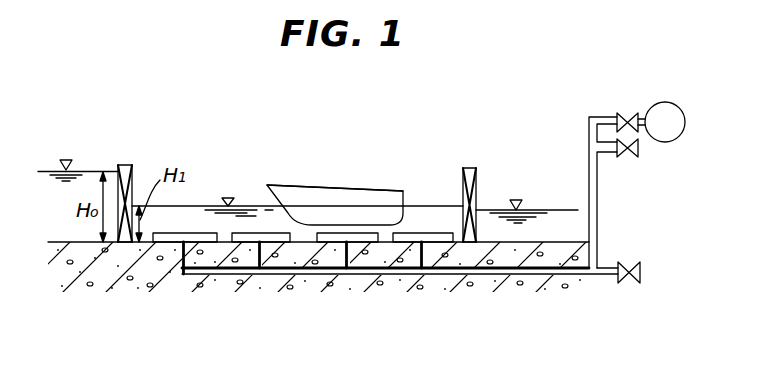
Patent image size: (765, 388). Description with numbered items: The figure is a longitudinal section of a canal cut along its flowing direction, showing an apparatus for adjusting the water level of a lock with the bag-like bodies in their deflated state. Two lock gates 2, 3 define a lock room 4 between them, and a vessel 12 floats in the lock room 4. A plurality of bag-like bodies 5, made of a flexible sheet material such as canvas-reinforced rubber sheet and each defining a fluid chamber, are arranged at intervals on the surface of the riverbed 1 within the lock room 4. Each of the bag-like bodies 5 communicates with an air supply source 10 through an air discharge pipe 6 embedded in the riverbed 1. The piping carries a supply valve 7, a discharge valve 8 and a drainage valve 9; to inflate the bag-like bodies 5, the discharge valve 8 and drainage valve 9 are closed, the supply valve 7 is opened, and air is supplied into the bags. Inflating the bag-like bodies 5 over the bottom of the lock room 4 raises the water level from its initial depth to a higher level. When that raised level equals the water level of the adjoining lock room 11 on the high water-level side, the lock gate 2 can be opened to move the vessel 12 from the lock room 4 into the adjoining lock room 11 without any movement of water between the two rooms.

The riverbed 1 is at (158, 276).
The lock gate 2 is at (125, 165).
The lock gate 3 is at (470, 168).
The lock room 4 is at (298, 174).
The bag-like bodies 5 is at (233, 233).
The air discharge pipe 6 is at (300, 274).
The supply valve 7 is at (621, 113).
The discharge valve 8 is at (618, 158).
The drainage valve 9 is at (640, 271).
The air supply source 10 is at (667, 142).
The adjoining lock room 11 is at (78, 161).
The vessel 12 is at (337, 186).